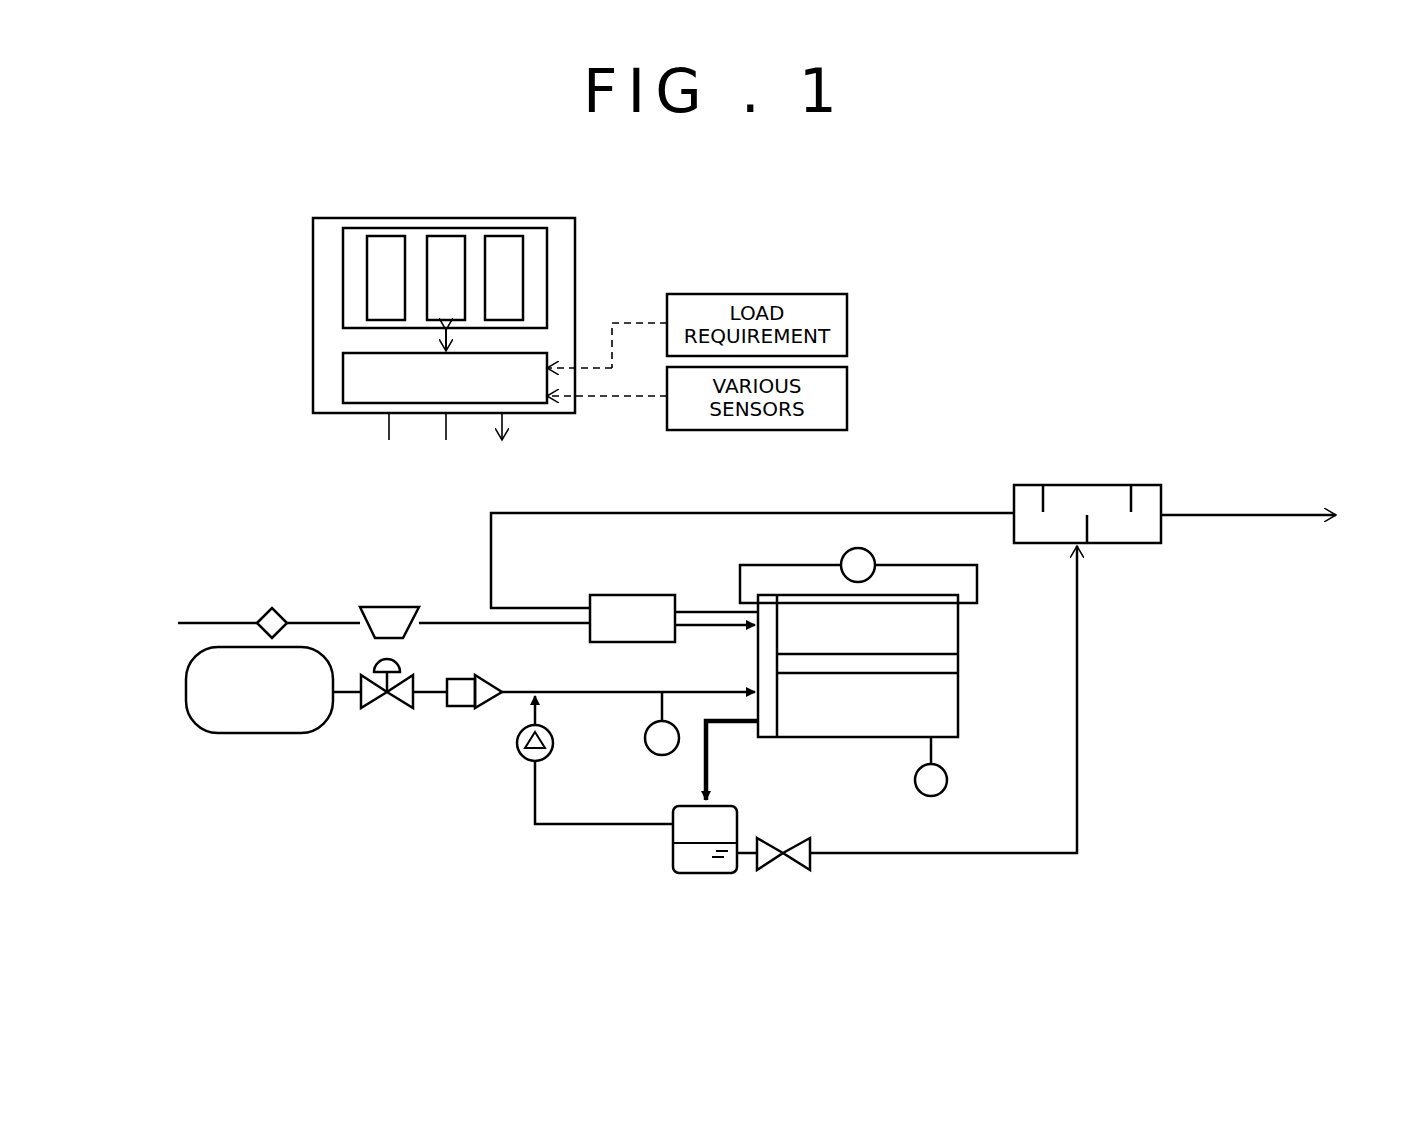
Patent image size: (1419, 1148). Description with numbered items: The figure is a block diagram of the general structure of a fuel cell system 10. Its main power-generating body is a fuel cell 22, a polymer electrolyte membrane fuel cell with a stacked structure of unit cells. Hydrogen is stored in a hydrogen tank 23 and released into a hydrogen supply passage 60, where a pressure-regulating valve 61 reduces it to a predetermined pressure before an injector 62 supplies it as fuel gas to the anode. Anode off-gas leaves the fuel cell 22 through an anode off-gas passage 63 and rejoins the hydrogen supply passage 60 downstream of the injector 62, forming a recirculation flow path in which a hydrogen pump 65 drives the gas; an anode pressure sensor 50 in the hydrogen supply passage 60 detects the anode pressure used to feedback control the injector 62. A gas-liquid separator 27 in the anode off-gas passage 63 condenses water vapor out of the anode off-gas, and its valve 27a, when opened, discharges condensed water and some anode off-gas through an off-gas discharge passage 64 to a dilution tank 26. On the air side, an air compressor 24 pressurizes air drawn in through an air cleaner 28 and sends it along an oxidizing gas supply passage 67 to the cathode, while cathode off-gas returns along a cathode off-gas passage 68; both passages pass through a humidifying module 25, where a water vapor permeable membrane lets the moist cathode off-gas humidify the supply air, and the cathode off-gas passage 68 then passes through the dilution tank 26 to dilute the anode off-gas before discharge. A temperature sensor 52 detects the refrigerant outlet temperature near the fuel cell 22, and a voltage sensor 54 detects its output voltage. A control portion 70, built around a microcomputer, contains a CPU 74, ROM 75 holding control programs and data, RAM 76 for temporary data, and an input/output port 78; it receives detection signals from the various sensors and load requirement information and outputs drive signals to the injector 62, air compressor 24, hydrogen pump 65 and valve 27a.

The fuel cell system 10 is at (965, 350).
The fuel cell 22 is at (838, 738).
The hydrogen tank 23 is at (245, 733).
The air compressor 24 is at (383, 607).
The humidifying module 25 is at (648, 595).
The dilution tank 26 is at (1108, 485).
The gas-liquid separator 27 is at (708, 875).
The valve 27a is at (778, 872).
The air cleaner 28 is at (262, 612).
The anode pressure sensor 50 is at (648, 750).
The temperature sensor 52 is at (947, 782).
The voltage sensor 54 is at (866, 550).
The hydrogen supply passage 60 is at (585, 692).
The pressure-regulating valve 61 is at (393, 708).
The injector 62 is at (461, 706).
The anode off-gas passage 63 is at (594, 826).
The off-gas discharge passage 64 is at (945, 856).
The hydrogen pump 65 is at (552, 740).
The oxidizing gas supply passage 67 is at (460, 622).
The cathode off-gas passage 68 is at (601, 511).
The control portion 70 is at (577, 255).
The CPU 74 is at (388, 236).
The ROM 75 is at (446, 236).
The RAM 76 is at (503, 236).
The input/output port 78 is at (343, 378).